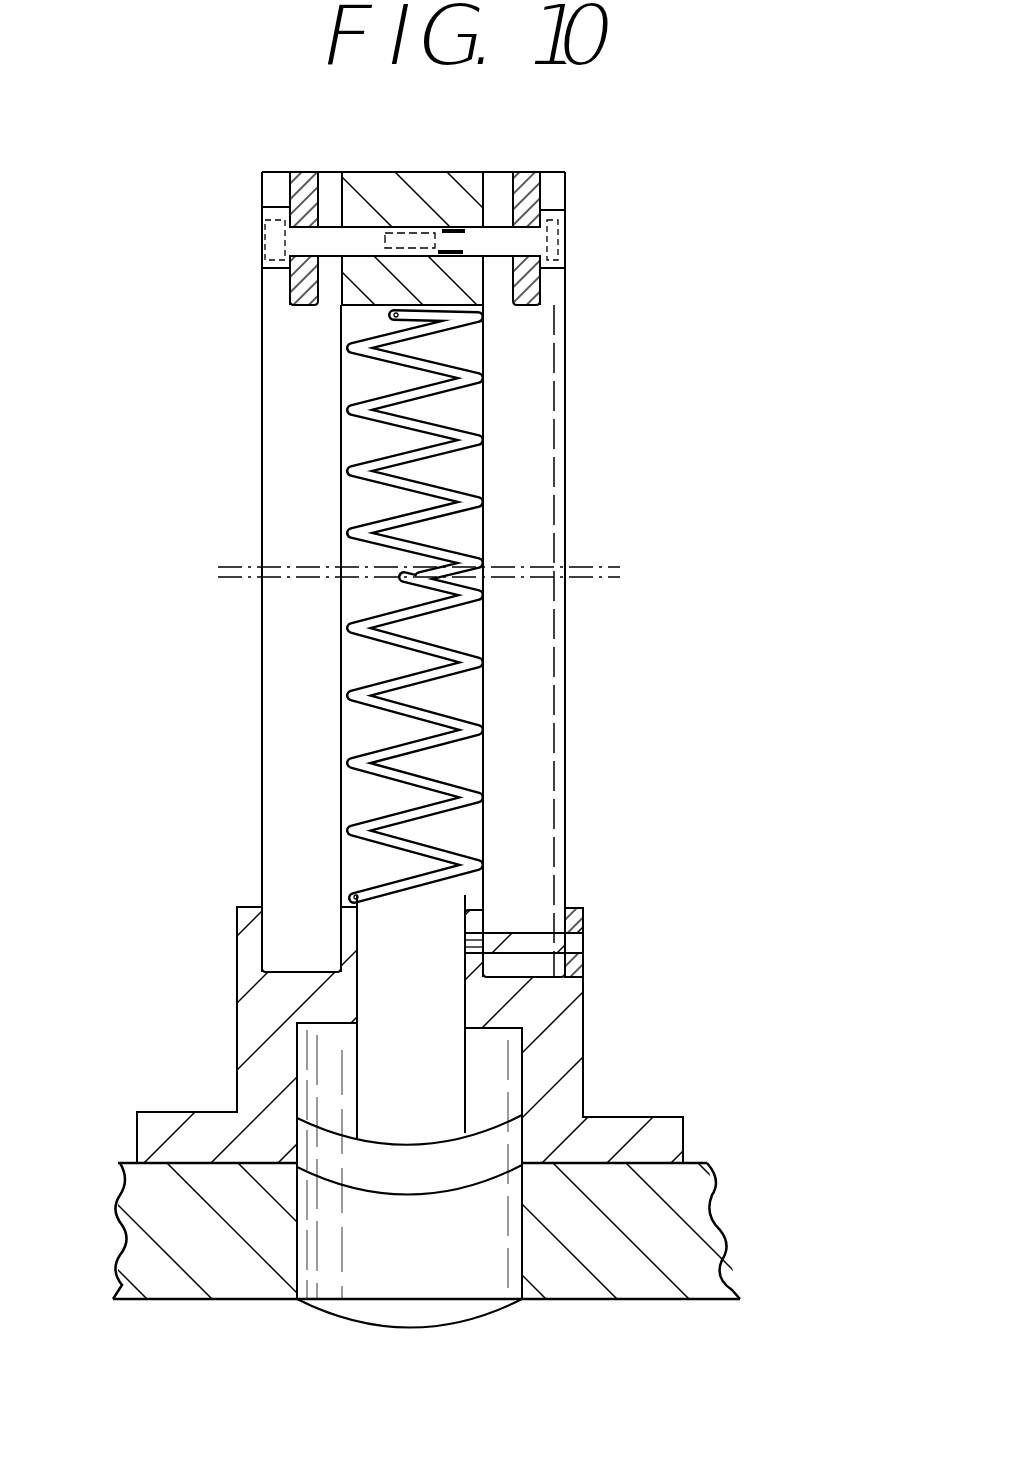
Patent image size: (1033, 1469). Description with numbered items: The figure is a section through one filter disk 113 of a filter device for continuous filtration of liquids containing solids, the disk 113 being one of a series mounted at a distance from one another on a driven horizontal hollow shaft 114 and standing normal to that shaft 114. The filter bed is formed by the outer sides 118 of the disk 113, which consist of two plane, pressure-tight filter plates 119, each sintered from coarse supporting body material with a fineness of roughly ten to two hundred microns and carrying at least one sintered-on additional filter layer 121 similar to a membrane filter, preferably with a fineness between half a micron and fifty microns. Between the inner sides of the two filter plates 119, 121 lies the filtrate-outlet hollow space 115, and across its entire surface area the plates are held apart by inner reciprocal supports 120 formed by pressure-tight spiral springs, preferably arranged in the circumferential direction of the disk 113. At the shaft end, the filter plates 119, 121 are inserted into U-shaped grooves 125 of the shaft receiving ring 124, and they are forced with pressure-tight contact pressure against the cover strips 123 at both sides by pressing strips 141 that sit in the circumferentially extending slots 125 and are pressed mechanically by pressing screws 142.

The filter disk 113 is at (604, 341).
The hollow shaft 114 is at (690, 1198).
The filtrate-outlet hollow space 115 is at (368, 389).
The outer side 118 is at (262, 672).
The filter plate 119 is at (303, 460).
The support 120 is at (423, 818).
The additional filter layer 121 is at (263, 518).
The cover 123 is at (425, 215).
The shaft receiving ring 124 is at (487, 997).
The U-shaped groove 125 is at (253, 952).
The pressing strip 141 is at (303, 295).
The pressing screw 142 is at (540, 238).